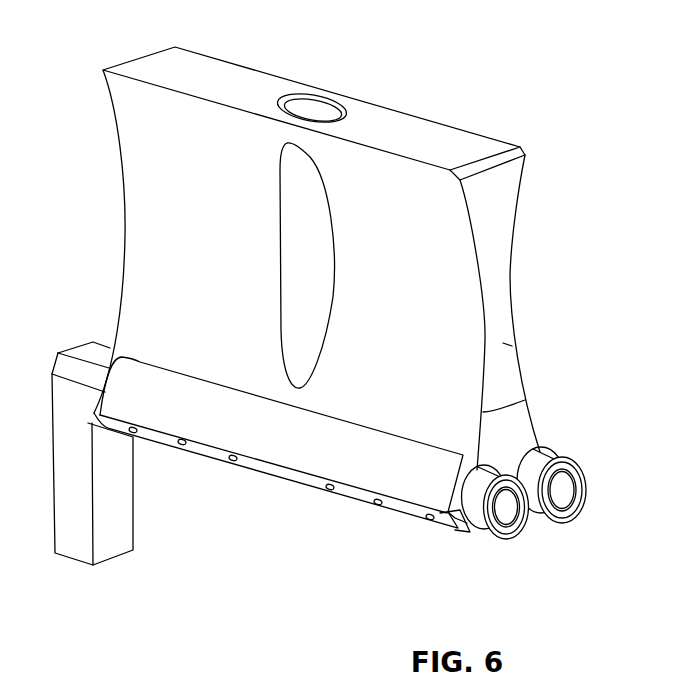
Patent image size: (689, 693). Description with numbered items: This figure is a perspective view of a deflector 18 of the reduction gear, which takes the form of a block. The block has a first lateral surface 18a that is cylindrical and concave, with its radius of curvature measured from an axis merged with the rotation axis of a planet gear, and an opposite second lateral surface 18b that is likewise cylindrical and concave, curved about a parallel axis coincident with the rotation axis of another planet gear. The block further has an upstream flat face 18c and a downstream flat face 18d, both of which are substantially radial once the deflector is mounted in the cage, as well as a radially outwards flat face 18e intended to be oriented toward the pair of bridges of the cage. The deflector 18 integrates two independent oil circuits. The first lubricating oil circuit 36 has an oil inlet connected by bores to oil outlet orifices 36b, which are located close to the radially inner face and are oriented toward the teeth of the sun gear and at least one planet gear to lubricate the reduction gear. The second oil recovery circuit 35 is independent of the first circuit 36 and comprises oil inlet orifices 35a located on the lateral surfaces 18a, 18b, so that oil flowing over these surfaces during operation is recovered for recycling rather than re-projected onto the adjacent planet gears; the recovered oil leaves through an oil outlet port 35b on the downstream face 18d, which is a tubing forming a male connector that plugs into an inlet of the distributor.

The deflector 18 is at (338, 255).
The first lateral surface 18a is at (525, 400).
The second lateral surface 18b is at (513, 267).
The upstream flat face 18c is at (120, 243).
The downstream flat face 18d is at (505, 343).
The radially outwards flat face 18e is at (438, 138).
The second oil recovery circuit 35 is at (568, 492).
The oil inlet orifice 35a is at (287, 407).
The oil outlet port 35b is at (511, 513).
The first lubricating oil circuit 36 is at (520, 534).
The oil outlet orifice 36b is at (313, 112).